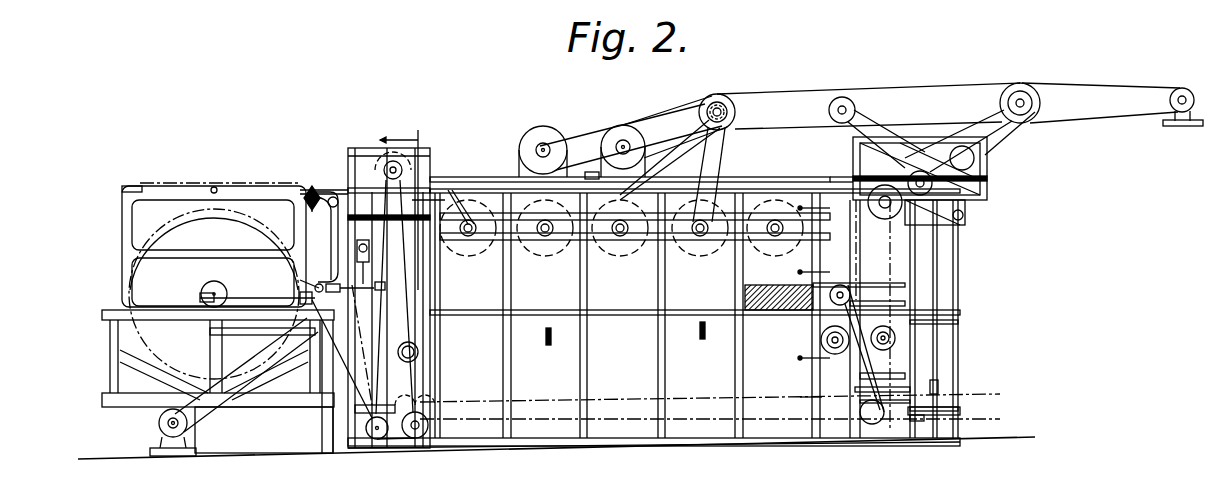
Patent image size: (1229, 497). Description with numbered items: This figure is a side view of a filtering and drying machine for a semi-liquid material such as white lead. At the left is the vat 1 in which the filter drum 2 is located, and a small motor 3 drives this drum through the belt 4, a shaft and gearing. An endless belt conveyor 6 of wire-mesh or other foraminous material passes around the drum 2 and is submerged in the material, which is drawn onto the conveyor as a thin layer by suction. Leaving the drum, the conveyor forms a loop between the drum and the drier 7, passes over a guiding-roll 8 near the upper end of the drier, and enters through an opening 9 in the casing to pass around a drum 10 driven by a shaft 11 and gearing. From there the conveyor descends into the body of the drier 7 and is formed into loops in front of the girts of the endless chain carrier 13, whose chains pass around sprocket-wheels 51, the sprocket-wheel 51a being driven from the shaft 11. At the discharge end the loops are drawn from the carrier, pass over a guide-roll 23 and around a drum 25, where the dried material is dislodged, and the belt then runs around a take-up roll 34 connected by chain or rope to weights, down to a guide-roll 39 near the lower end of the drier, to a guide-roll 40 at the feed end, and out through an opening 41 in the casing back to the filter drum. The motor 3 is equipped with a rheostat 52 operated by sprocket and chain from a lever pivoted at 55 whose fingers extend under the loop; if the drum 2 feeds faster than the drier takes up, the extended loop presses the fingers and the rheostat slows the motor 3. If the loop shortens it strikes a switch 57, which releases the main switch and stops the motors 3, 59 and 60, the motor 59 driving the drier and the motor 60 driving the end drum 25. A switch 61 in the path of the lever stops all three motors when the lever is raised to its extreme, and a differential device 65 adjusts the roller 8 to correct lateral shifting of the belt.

The vat 1 is at (218, 318).
The drum 2 is at (190, 236).
The motor 3 is at (182, 425).
The belt 4 is at (215, 418).
The endless belt conveyor 6 is at (507, 305).
The drier 7 is at (660, 444).
The guiding-roll 8 is at (337, 209).
The opening 9 is at (350, 182).
The drum 10 is at (408, 148).
The shaft 11 is at (575, 146).
The endless chain carrier 13 is at (674, 311).
The guide-roll 23 is at (865, 165).
The drum 25 is at (988, 175).
The take-up roll 34 is at (945, 270).
The guide-roll 39 is at (925, 436).
The guide-roll 40 is at (365, 416).
The opening 41 is at (352, 362).
The sprocket-wheels 51 is at (430, 205).
The sprocket-wheel 51a is at (870, 222).
The rheostat 52 is at (366, 254).
The pivot 55 is at (332, 286).
The switch 57 is at (305, 286).
The motor 59 is at (1112, 107).
The motor 60 is at (962, 215).
The switch 61 is at (378, 282).
The differential device 65 is at (314, 185).